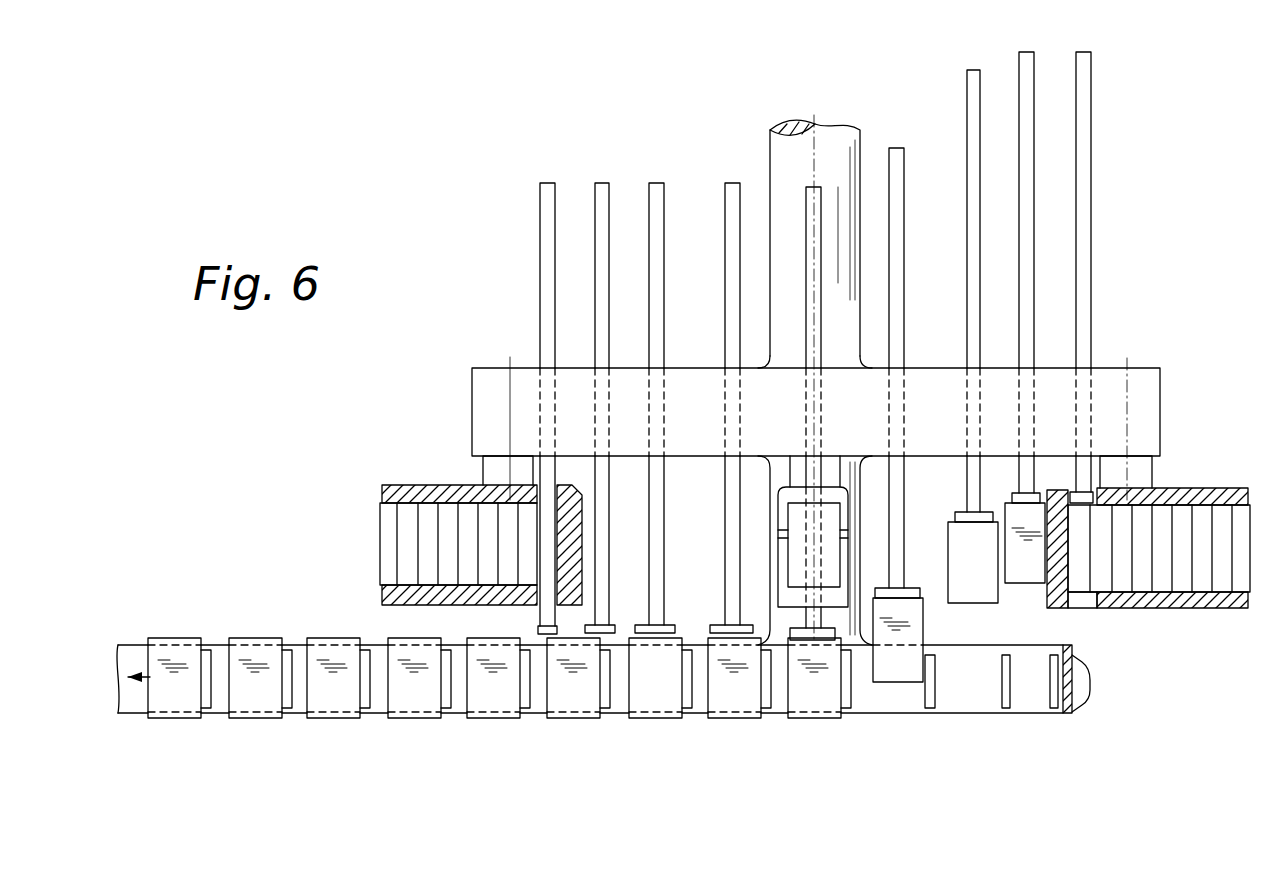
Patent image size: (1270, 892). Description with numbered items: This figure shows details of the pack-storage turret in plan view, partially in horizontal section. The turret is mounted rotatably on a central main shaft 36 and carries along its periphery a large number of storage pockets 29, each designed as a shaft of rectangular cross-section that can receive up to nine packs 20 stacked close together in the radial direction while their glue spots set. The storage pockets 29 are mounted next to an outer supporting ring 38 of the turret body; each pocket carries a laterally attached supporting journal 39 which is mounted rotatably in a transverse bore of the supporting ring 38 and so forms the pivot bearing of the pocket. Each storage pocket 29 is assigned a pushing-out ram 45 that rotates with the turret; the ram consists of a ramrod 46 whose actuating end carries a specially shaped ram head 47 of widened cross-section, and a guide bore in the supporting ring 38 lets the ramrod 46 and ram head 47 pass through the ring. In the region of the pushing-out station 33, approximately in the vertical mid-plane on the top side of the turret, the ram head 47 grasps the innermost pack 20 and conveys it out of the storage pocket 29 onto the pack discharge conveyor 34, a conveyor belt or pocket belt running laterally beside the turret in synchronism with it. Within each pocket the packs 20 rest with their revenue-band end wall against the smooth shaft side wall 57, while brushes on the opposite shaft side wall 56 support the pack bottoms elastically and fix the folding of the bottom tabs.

The pack 20 is at (405, 550).
The storage pocket 29 is at (405, 482).
The pushing-out station 33 is at (819, 727).
The pack discharge conveyor 34 is at (963, 719).
The main shaft 36 is at (780, 170).
The supporting ring 38 is at (484, 366).
The supporting journal 39 is at (1127, 395).
The pushing-out ram 45 is at (1099, 261).
The ramrod 46 is at (1080, 175).
The ram head 47 is at (921, 592).
The shaft side wall 56 is at (1205, 602).
The shaft side wall 57 is at (1206, 487).